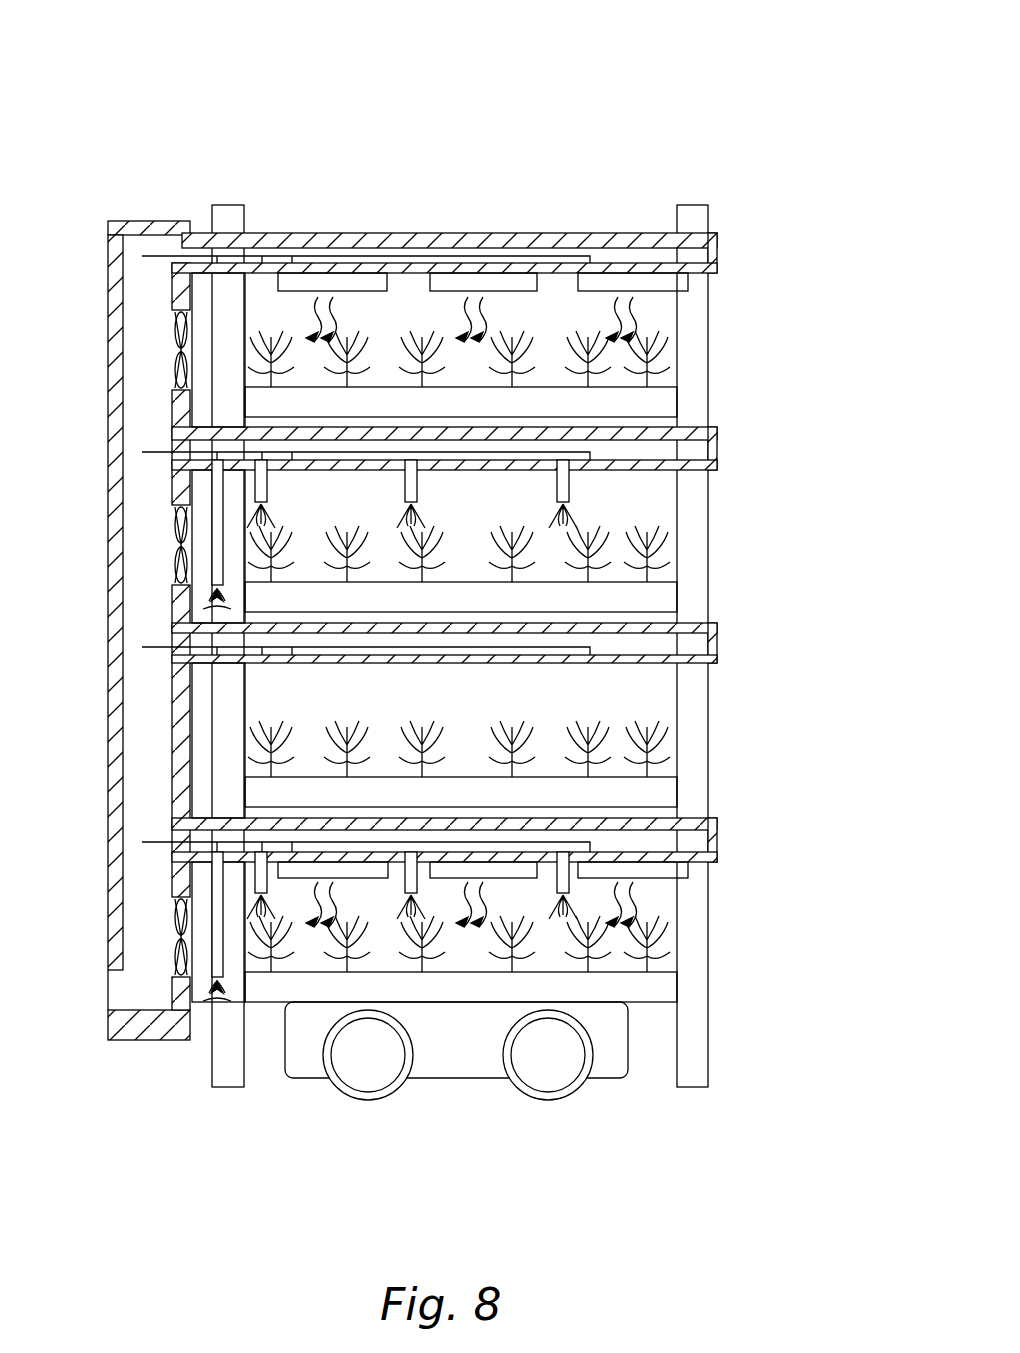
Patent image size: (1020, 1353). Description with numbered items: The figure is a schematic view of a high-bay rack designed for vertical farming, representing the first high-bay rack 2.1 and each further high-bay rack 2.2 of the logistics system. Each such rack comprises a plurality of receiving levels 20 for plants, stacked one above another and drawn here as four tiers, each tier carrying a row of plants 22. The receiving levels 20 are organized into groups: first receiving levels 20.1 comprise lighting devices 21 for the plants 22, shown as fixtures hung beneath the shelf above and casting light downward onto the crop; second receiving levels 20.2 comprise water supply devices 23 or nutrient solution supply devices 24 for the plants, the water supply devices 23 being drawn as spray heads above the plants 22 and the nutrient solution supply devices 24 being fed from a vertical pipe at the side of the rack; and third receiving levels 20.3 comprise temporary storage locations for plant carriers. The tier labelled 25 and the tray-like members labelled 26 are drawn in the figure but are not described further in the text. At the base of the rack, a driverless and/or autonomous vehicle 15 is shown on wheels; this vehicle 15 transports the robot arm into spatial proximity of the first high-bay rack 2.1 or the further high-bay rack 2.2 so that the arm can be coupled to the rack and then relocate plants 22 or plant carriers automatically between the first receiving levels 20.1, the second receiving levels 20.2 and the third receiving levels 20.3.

The first high-bay rack 2.1 is at (411, 546).
The further high-bay rack 2.2 is at (412, 646).
The vehicle 15 is at (455, 1050).
The receiving levels 20 is at (535, 627).
The first receiving levels 20.1 is at (657, 312).
The second receiving levels 20.2 is at (657, 510).
The third receiving levels 20.3 is at (657, 704).
The lighting devices 21 is at (337, 283).
The plants 22 is at (660, 354).
The water supply devices 23 is at (266, 490).
The nutrient solution supply devices 24 is at (217, 533).
The cultivation space 25 is at (487, 713).
The cultivation tray 26 is at (653, 398).